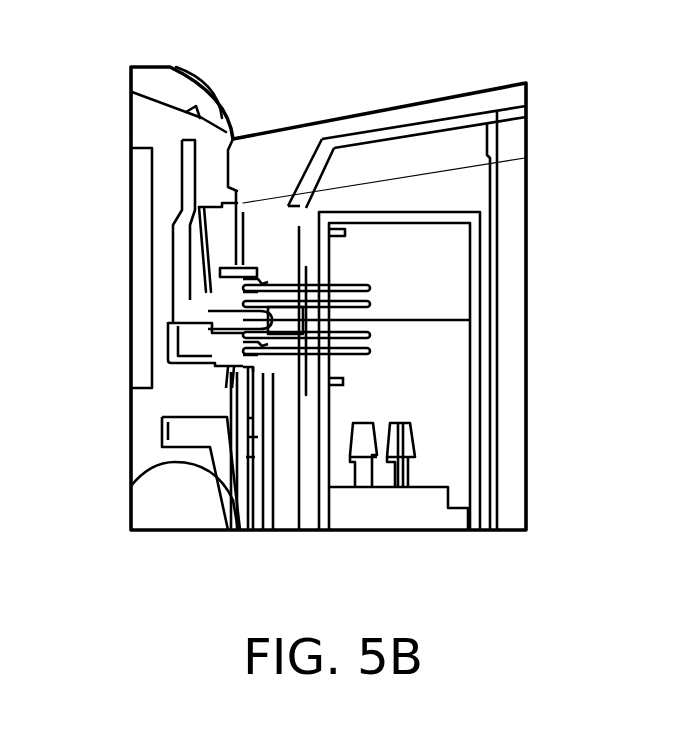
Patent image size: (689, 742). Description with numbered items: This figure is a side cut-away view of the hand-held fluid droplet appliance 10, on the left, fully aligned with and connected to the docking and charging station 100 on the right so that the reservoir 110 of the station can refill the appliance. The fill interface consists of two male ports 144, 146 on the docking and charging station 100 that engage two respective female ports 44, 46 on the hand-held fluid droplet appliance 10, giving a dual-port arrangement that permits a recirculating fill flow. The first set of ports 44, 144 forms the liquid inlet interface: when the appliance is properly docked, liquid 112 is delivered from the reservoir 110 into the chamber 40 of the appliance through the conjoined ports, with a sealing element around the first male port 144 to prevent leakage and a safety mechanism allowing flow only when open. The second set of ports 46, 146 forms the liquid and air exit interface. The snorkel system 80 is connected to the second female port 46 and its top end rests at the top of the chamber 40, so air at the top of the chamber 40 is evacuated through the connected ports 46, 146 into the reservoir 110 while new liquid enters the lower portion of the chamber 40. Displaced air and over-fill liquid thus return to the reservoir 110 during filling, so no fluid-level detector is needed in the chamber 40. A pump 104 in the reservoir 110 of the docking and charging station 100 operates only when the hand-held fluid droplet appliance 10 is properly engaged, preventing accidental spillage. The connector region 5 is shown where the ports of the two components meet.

The hand-held fluid droplet appliance 10 is at (110, 141).
The docking and charging station 100 is at (432, 98).
The snorkel system 80 is at (187, 182).
The electrical connector 5 is at (178, 294).
The chamber 40 is at (177, 398).
The first female port 44 is at (257, 272).
The first male port 144 is at (280, 278).
The second female port 46 is at (243, 520).
The second male port 146 is at (283, 357).
The reservoir 110 is at (473, 260).
The liquid 112 is at (433, 369).
The pump 104 is at (414, 515).